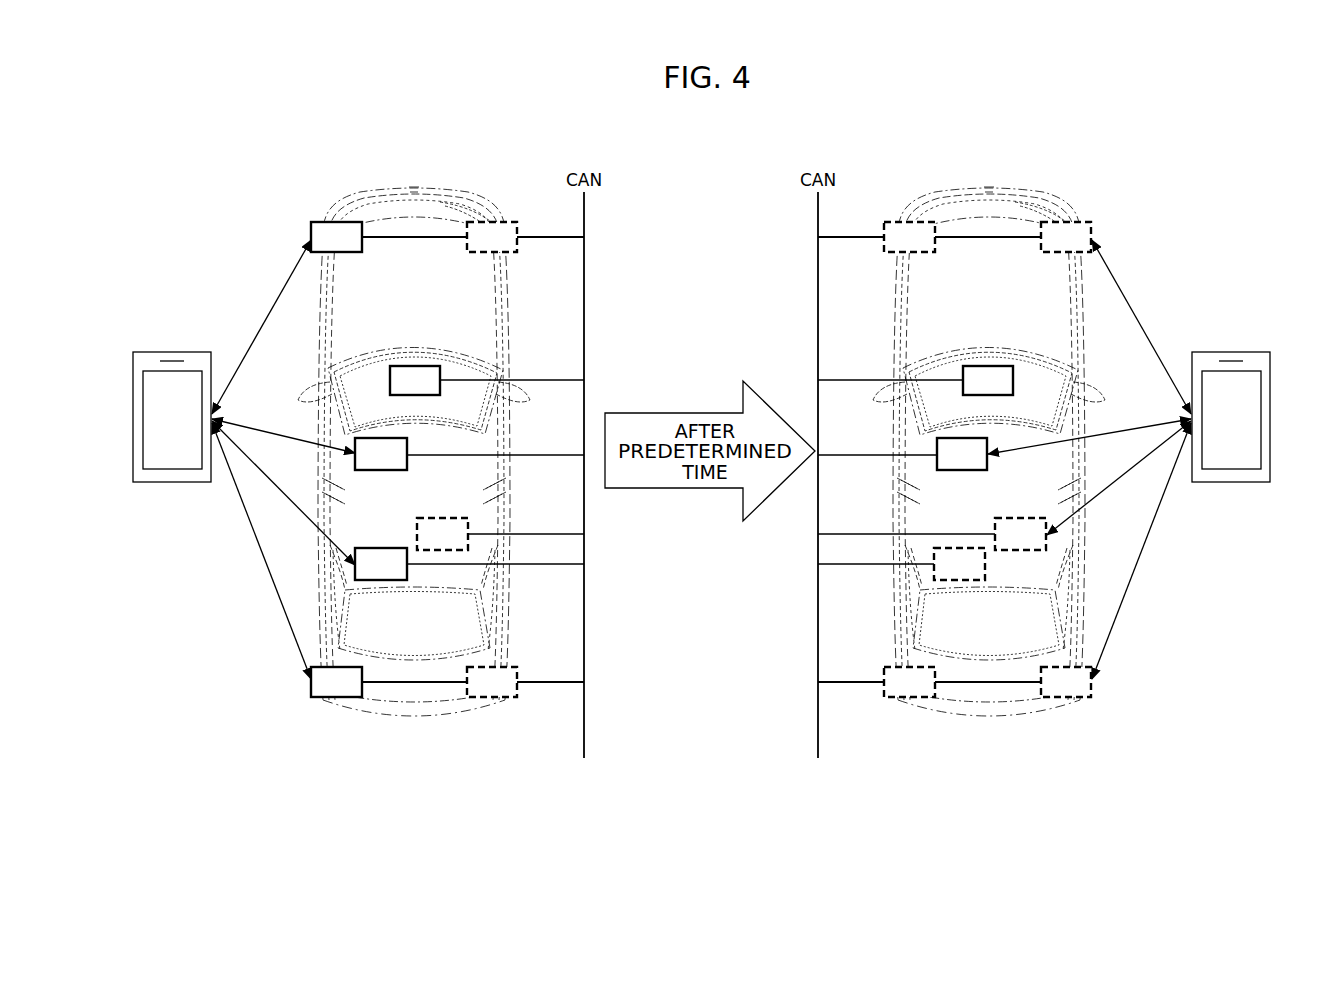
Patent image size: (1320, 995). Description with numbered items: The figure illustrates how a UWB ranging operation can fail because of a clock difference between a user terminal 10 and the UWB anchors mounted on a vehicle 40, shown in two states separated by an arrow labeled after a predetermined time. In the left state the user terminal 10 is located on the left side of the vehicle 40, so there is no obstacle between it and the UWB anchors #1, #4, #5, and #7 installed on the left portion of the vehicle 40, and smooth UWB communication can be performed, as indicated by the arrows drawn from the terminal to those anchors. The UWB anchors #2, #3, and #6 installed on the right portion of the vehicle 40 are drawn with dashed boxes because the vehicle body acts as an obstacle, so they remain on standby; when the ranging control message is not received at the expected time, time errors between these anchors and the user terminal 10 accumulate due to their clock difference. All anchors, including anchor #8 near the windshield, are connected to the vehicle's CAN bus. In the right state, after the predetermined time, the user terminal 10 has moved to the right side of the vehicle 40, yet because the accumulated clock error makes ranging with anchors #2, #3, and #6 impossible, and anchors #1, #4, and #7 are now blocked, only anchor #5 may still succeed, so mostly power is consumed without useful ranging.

The user terminal 10 is at (172, 352).
The vehicle 40 is at (413, 186).
The UWB anchor # 1 is at (623, 237).
The UWB anchor # 2 is at (779, 237).
The UWB anchor # 3 is at (779, 682).
The UWB anchor # 4 is at (623, 682).
The UWB anchor # 5 is at (671, 454).
The UWB anchor # 6 is at (731, 534).
The UWB anchor # 7 is at (670, 564).
The device # 8 is at (701, 380).